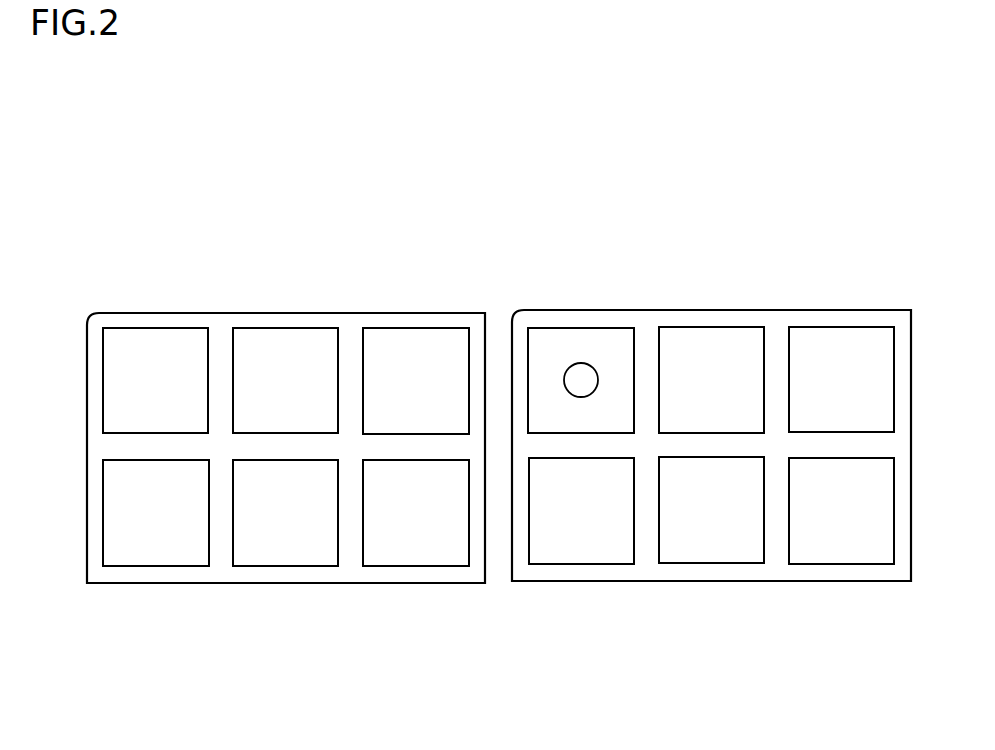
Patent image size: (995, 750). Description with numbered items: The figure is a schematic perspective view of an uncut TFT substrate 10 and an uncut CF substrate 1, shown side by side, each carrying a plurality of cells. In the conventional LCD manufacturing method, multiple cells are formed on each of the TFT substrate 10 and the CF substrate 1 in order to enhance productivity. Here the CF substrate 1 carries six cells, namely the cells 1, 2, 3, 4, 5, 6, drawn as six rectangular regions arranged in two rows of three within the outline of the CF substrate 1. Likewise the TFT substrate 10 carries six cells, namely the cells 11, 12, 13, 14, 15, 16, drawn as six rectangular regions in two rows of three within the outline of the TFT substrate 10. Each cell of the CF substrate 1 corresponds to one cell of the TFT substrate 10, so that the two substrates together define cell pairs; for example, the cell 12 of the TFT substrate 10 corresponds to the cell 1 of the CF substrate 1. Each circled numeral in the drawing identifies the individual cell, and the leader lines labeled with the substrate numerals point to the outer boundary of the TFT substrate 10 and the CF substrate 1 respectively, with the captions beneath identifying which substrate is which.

The CF substrate 1 is at (710, 310).
The cell 2 is at (581, 511).
The cell 3 is at (711, 380).
The cell 4 is at (711, 510).
The cell 5 is at (841, 379).
The cell 6 is at (841, 511).
The TFT substrate 10 is at (286, 313).
The cell 11 is at (156, 513).
The cell 12 is at (155, 380).
The cell 13 is at (285, 513).
The cell 14 is at (285, 380).
The cell 15 is at (416, 513).
The cell 16 is at (416, 381).